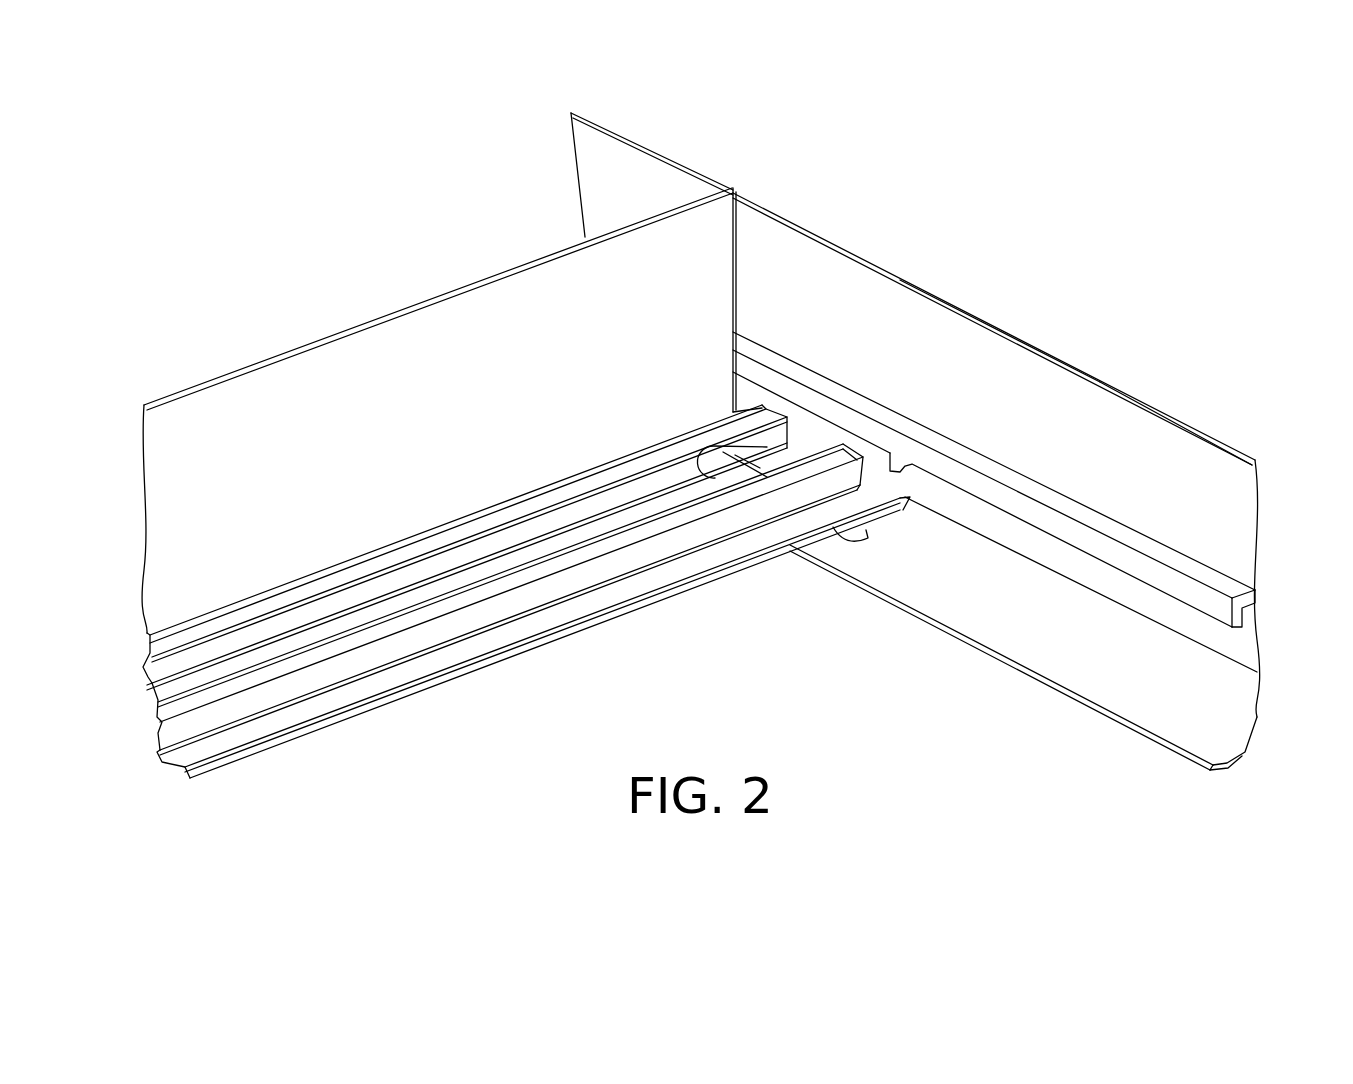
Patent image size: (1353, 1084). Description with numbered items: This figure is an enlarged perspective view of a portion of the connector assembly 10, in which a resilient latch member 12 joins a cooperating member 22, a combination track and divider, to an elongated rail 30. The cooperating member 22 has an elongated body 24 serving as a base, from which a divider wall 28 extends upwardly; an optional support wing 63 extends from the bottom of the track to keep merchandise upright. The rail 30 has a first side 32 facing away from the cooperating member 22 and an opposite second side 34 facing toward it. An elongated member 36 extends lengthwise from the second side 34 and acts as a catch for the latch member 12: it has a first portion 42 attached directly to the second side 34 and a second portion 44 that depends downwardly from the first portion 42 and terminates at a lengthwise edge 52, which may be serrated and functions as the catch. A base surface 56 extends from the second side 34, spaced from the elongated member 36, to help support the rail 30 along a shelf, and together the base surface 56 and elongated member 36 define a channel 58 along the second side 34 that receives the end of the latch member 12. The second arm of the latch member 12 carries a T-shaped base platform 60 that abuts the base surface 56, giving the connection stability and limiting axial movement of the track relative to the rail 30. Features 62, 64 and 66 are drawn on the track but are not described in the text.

The connector assembly 10 is at (793, 575).
The latch member 12 is at (770, 410).
The cooperating member 22 is at (527, 600).
The elongated body 24 is at (343, 667).
The divider wall 28 is at (398, 422).
The rail 30 is at (890, 268).
The first side 32 is at (1163, 412).
The second side 34 is at (1028, 333).
The elongated member 36 is at (1262, 621).
The first portion 42 is at (1232, 590).
The second portion 44 is at (1223, 641).
The edge 52 is at (1187, 593).
The base surface 56 is at (962, 593).
The channel 58 is at (1265, 672).
The base platform 60 is at (1060, 640).
The upper flange 62 is at (188, 632).
The support wing 63 is at (633, 588).
The lower flange 64 is at (178, 683).
The middle flange 66 is at (188, 658).